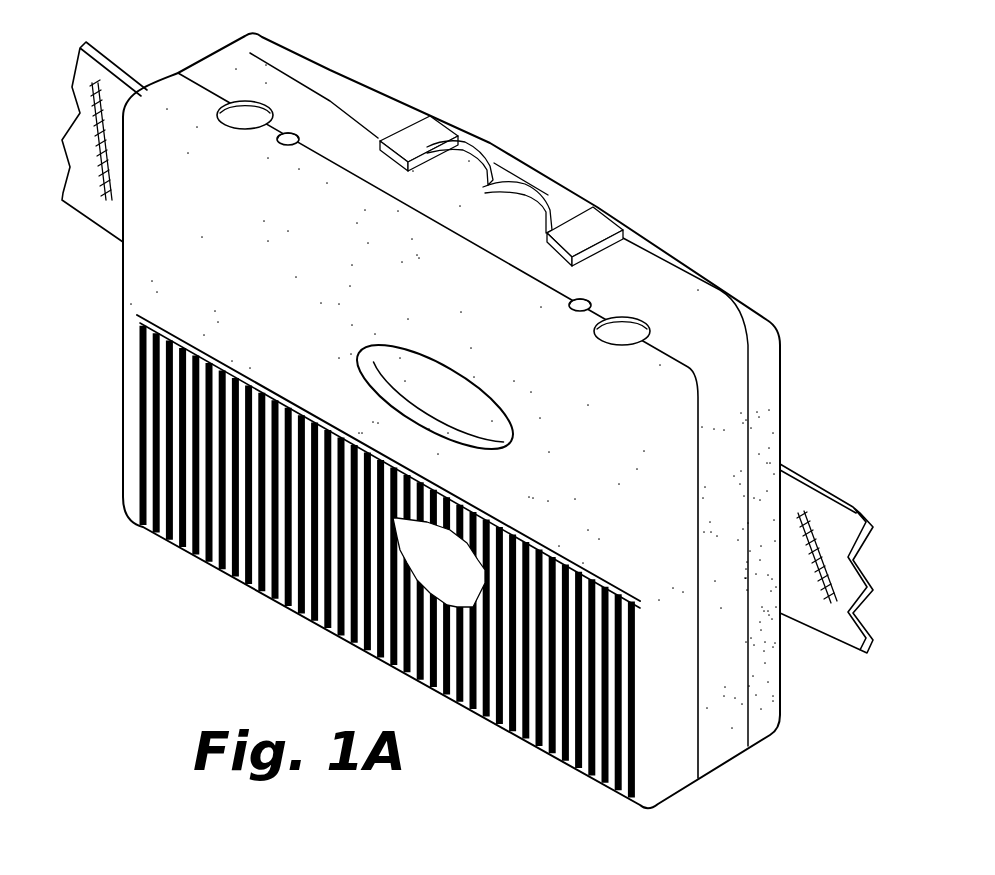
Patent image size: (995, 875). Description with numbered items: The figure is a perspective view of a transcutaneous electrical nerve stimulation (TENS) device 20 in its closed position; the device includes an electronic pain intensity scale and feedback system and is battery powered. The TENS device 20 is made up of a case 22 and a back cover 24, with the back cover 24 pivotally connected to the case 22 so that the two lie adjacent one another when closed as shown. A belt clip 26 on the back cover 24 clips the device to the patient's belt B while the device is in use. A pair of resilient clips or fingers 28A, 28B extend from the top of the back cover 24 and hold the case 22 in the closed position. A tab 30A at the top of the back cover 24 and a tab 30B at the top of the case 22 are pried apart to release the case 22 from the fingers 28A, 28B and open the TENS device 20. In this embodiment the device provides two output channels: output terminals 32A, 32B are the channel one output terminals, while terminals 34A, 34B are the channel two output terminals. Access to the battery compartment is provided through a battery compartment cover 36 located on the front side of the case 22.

The TENS device 20 is at (686, 198).
The case 22 is at (120, 328).
The back cover 24 is at (790, 418).
The belt clip 26 is at (507, 143).
The resilient finger 28A is at (417, 128).
The resilient finger 28B is at (596, 230).
The tab 30A is at (460, 147).
The tab 30B is at (532, 197).
The output terminal 32A is at (622, 327).
The output terminal 32B is at (582, 304).
The output terminal 34A is at (247, 117).
The output terminal 34B is at (283, 146).
The battery compartment cover 36 is at (533, 717).
The belt B is at (125, 73).